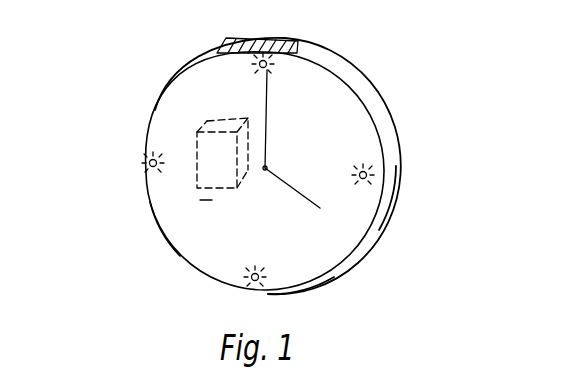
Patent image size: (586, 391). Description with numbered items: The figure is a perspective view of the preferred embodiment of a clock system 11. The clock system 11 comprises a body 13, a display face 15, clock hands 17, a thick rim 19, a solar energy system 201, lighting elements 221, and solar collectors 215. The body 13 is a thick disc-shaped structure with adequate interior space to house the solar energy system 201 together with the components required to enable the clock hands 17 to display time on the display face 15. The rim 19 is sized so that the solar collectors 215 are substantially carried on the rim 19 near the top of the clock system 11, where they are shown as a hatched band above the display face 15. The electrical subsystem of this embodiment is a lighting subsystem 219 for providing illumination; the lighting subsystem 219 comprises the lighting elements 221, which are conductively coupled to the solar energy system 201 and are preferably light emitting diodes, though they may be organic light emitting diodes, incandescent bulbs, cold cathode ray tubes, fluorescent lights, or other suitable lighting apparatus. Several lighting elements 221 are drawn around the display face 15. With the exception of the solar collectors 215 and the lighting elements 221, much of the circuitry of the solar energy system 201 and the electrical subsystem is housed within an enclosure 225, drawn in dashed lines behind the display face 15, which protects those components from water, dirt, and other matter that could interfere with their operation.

The clock system 11 is at (393, 70).
The body 13 is at (345, 277).
The display face 15 is at (198, 97).
The clock hands 17 is at (268, 110).
The thick rim 19 is at (385, 198).
The solar energy system 201 is at (205, 200).
The solar collectors 215 is at (257, 38).
The lighting subsystem 219 is at (150, 190).
The lighting elements 221 is at (252, 64).
The enclosure 225 is at (197, 134).